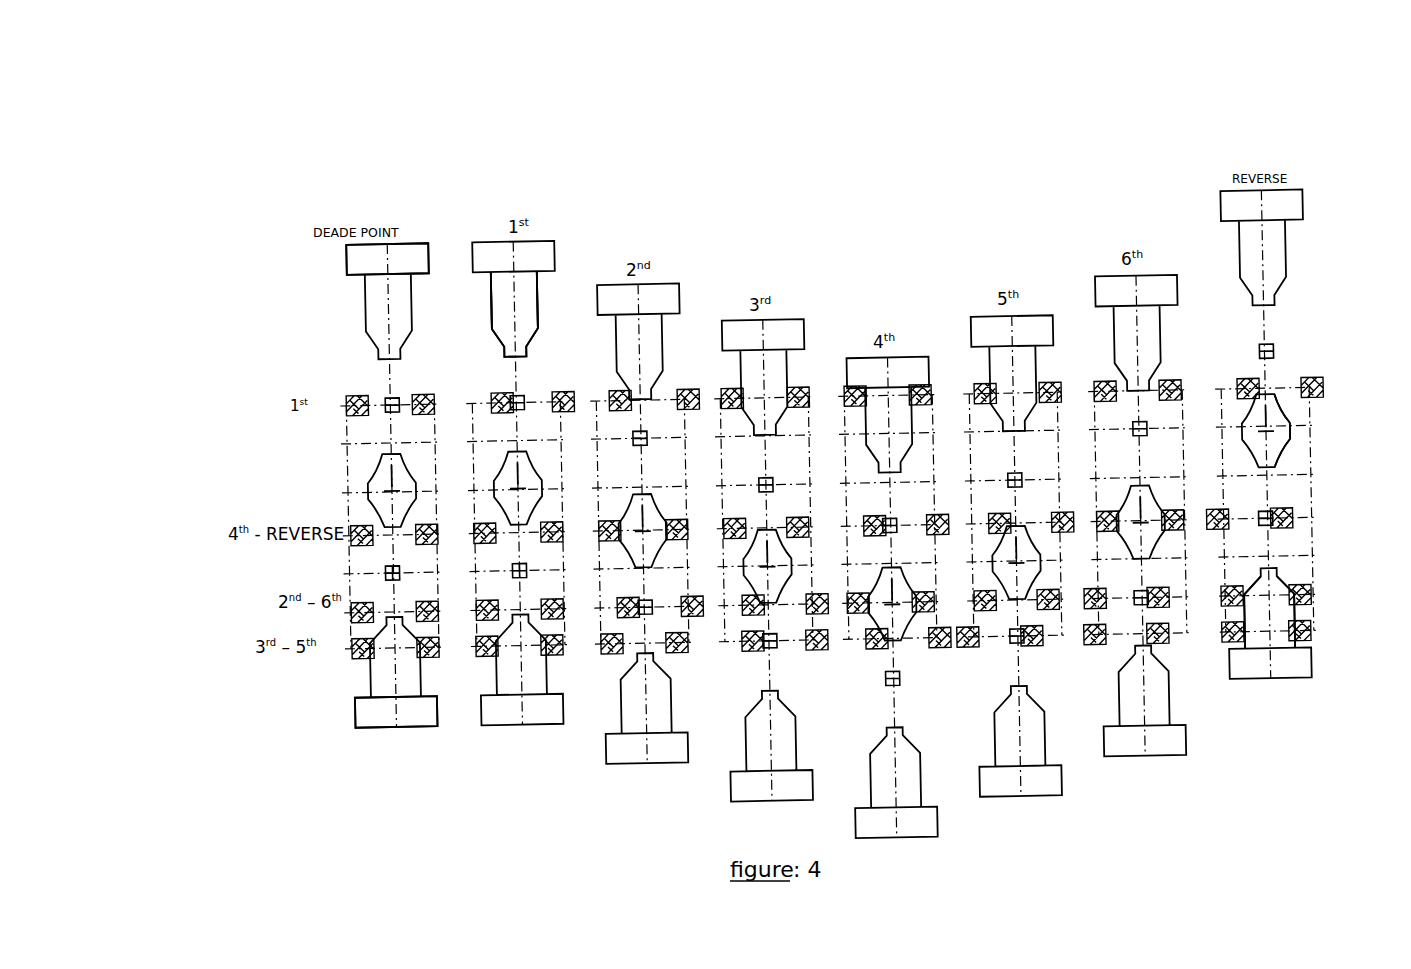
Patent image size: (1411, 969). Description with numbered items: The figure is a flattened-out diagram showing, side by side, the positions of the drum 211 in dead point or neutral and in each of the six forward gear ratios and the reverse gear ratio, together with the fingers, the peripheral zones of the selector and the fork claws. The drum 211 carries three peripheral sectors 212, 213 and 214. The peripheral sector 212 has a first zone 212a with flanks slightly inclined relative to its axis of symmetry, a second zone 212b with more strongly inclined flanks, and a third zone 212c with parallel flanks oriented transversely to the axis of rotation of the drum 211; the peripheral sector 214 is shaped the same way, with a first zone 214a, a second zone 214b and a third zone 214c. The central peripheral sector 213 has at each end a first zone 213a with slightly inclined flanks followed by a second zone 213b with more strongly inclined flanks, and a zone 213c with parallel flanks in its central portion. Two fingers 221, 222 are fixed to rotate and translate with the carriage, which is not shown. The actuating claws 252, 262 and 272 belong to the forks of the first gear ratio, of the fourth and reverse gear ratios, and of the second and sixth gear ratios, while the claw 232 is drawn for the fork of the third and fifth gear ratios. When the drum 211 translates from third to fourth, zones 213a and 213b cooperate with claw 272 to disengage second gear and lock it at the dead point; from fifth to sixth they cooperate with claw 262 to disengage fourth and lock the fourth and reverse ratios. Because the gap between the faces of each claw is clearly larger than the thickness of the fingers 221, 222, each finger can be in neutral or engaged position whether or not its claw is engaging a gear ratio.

The drum 211 is at (365, 258).
The peripheral sector 212 is at (378, 310).
The first zone 212a is at (502, 350).
The second zone 212b is at (497, 347).
The third zone 212c is at (490, 293).
The actuating claw 252 is at (420, 397).
The finger 221 is at (386, 409).
The central peripheral sector 213 is at (383, 498).
The first zone 213a is at (1275, 400).
The second zone 213b is at (1280, 415).
The zone with parallel flanks 213c is at (1288, 423).
The actuating claw 262 is at (378, 537).
The finger 222 is at (386, 574).
The actuating claw 272 is at (393, 614).
The stop elements of third-fifth position 232 is at (420, 648).
The peripheral sector 214 is at (410, 675).
The first zone 214a is at (1277, 575).
The second zone 214b is at (1287, 588).
The third zone 214c is at (1288, 620).